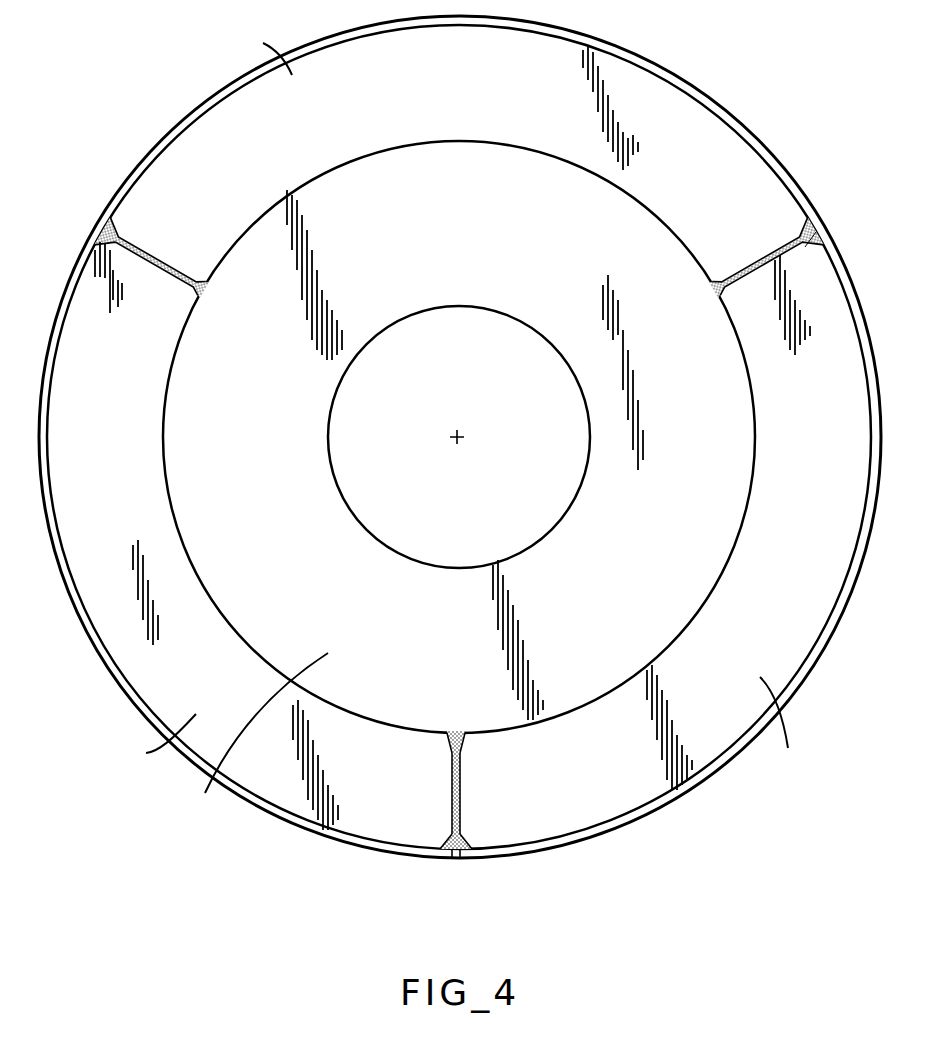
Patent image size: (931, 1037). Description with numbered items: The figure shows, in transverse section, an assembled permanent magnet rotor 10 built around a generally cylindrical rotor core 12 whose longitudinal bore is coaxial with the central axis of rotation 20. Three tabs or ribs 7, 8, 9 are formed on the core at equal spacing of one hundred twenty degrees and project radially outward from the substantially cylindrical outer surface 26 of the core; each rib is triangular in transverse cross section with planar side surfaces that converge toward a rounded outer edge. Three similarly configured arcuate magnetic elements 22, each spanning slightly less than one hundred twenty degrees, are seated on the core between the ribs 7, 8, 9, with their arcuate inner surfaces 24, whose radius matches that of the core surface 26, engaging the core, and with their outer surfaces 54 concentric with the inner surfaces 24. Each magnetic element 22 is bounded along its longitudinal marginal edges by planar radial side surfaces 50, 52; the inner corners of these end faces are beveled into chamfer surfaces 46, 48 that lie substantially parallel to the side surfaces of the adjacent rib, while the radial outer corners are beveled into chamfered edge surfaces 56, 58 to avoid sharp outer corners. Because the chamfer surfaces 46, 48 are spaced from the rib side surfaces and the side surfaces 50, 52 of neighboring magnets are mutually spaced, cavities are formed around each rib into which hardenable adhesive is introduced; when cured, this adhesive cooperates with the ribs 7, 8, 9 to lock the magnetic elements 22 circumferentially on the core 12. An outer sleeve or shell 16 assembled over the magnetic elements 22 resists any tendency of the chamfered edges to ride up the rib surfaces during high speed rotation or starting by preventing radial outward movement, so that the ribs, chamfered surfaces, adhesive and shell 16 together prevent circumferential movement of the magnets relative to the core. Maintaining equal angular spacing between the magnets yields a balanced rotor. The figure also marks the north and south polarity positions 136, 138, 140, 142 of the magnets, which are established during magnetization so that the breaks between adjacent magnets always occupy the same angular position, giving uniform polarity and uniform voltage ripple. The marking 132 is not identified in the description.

The permanent magnet rotor 10 is at (122, 130).
The outer sleeve or shell 16 is at (597, 46).
The outer surfaces 54 is at (346, 32).
The arcuate inner surface 24 is at (497, 140).
The outer surface of the core 26 is at (437, 140).
The polarity position 136 is at (464, 148).
The polarity position 142 is at (173, 436).
The polarity position 138 is at (745, 442).
The central axis 20 is at (461, 436).
The rotor core 12 is at (259, 741).
The arcuate magnetic elements 22 is at (456, 410).
The rib 8 is at (199, 292).
The rib 9 is at (720, 293).
The spoke rim joint 132 is at (816, 236).
The rib 7 is at (458, 736).
The chamfer surface 48 is at (443, 740).
The chamfer surface 46 is at (466, 740).
The planar radial side surface 52 is at (449, 787).
The planar radial side surface 50 is at (462, 787).
The chamfered edge surface 58 is at (452, 858).
The chamfered edge surface 56 is at (462, 858).
The polarity position 140 is at (450, 728).